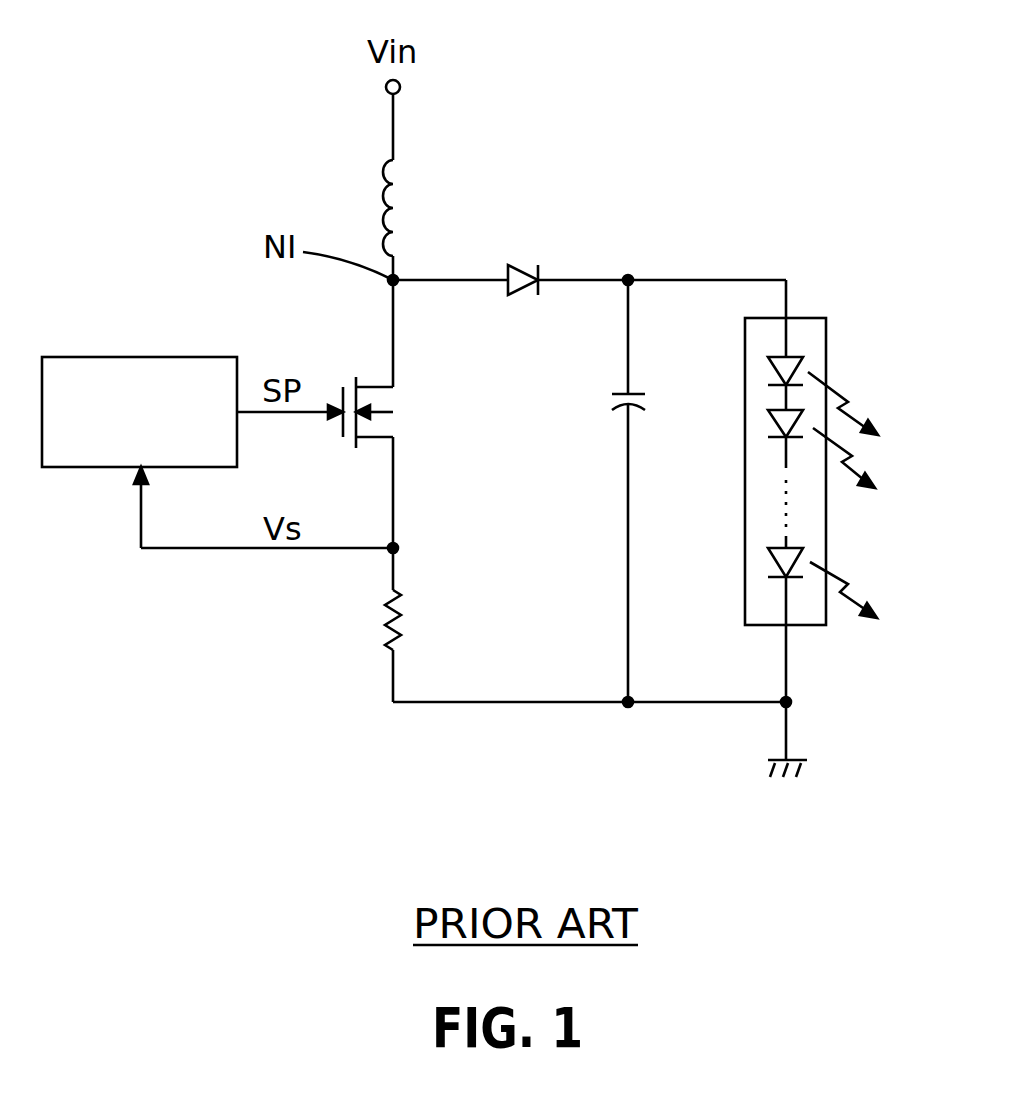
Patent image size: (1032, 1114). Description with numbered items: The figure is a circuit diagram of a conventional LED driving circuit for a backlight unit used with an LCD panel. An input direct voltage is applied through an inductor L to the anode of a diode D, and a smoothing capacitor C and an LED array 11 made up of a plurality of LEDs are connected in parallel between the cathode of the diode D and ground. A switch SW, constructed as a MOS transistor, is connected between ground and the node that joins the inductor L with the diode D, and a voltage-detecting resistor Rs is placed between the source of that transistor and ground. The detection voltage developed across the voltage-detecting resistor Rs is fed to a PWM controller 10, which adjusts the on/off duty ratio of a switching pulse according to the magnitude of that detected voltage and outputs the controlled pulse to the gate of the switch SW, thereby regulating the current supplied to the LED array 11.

The PWM controller 10 is at (118, 357).
The LED array 11 is at (826, 343).
The inductor L is at (370, 208).
The diode D is at (523, 256).
The smoothing capacitor C is at (646, 402).
The switch SW is at (403, 412).
The voltage-detecting resistor Rs is at (416, 620).